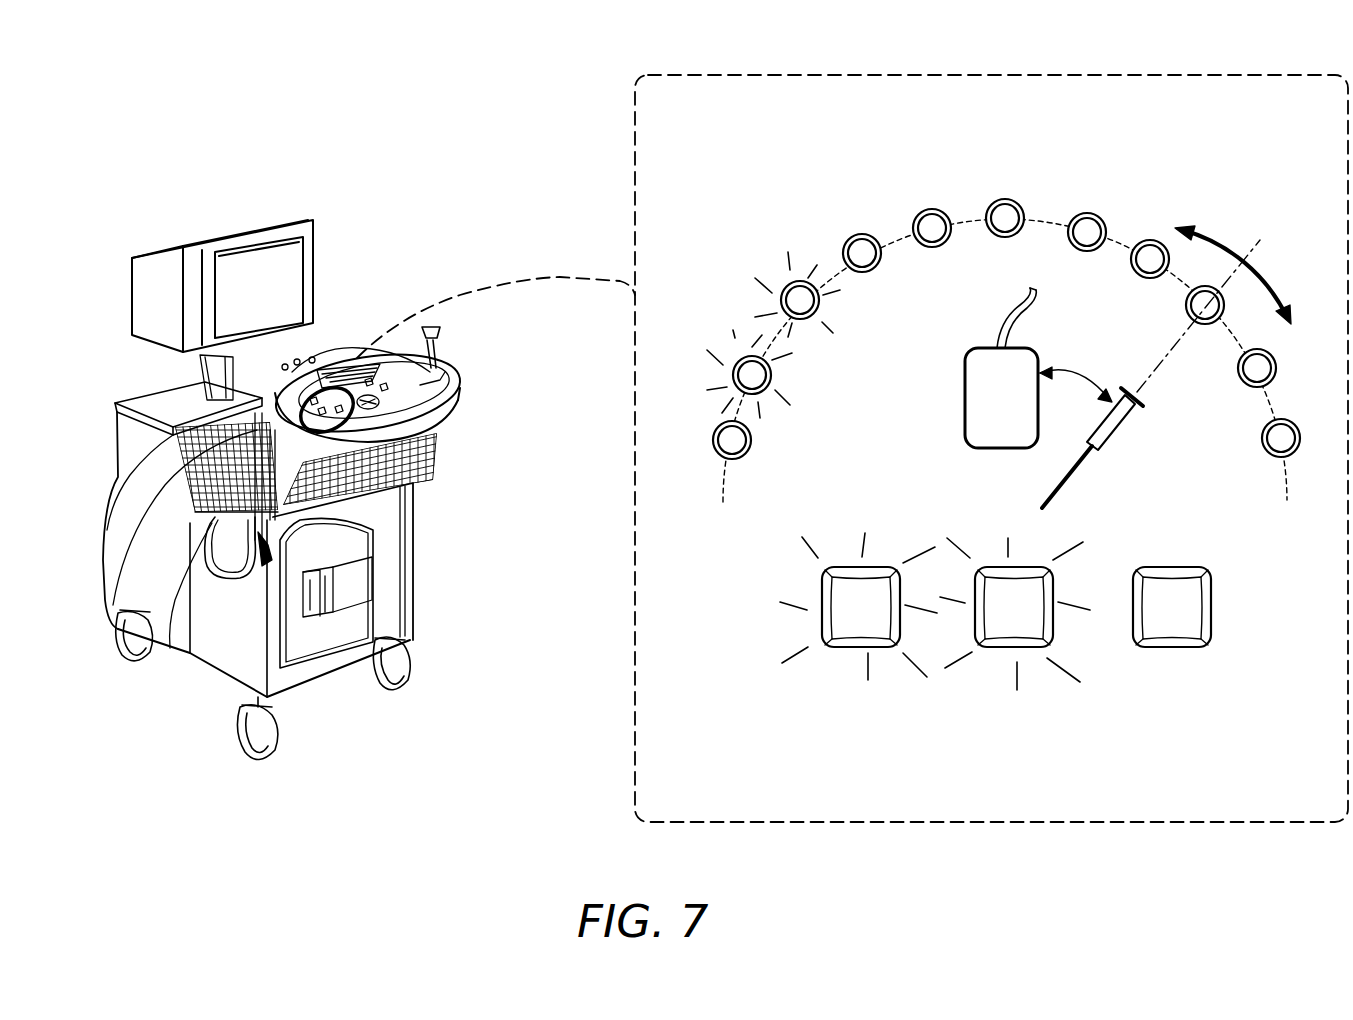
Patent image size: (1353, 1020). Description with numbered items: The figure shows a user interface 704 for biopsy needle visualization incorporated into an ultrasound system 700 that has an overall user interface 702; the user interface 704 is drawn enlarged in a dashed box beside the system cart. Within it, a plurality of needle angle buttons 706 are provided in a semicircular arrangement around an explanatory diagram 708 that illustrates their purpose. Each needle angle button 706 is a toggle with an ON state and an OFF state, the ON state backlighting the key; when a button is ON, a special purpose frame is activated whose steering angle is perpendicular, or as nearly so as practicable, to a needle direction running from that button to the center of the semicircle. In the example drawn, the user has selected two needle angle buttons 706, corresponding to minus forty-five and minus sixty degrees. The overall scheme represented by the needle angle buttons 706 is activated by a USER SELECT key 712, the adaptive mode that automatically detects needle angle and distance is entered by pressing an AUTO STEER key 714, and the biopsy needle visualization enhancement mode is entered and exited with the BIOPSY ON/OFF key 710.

The ultrasound system 700 is at (212, 210).
The overall user interface 702 is at (447, 373).
The user interface for biopsy needle visualization 704 is at (320, 358).
The needle angle buttons 706 is at (855, 238).
The explanatory diagram 708 is at (1160, 292).
The BIOPSY ON/OFF key 710 is at (862, 647).
The USER SELECT key 712 is at (1005, 647).
The AUTO STEER key 714 is at (1172, 647).